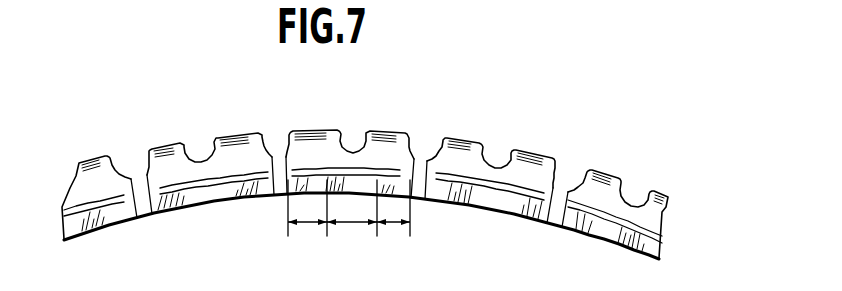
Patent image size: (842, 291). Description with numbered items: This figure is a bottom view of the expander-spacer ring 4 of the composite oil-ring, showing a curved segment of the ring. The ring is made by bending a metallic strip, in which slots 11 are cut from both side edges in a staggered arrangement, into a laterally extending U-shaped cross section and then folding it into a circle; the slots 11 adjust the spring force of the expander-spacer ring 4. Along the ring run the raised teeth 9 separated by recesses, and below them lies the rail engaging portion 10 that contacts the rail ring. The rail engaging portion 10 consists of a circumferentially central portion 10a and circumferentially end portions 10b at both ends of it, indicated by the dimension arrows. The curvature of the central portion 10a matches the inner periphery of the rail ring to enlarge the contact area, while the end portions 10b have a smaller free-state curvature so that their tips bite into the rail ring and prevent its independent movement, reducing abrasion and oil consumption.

The expander-spacer ring 4 is at (602, 166).
The tooth 9 is at (238, 152).
The rail engaging portion 10 is at (113, 217).
The circumferentially central portion 10a is at (356, 228).
The circumferentially end portions 10b is at (306, 226).
The slots 11 is at (128, 170).